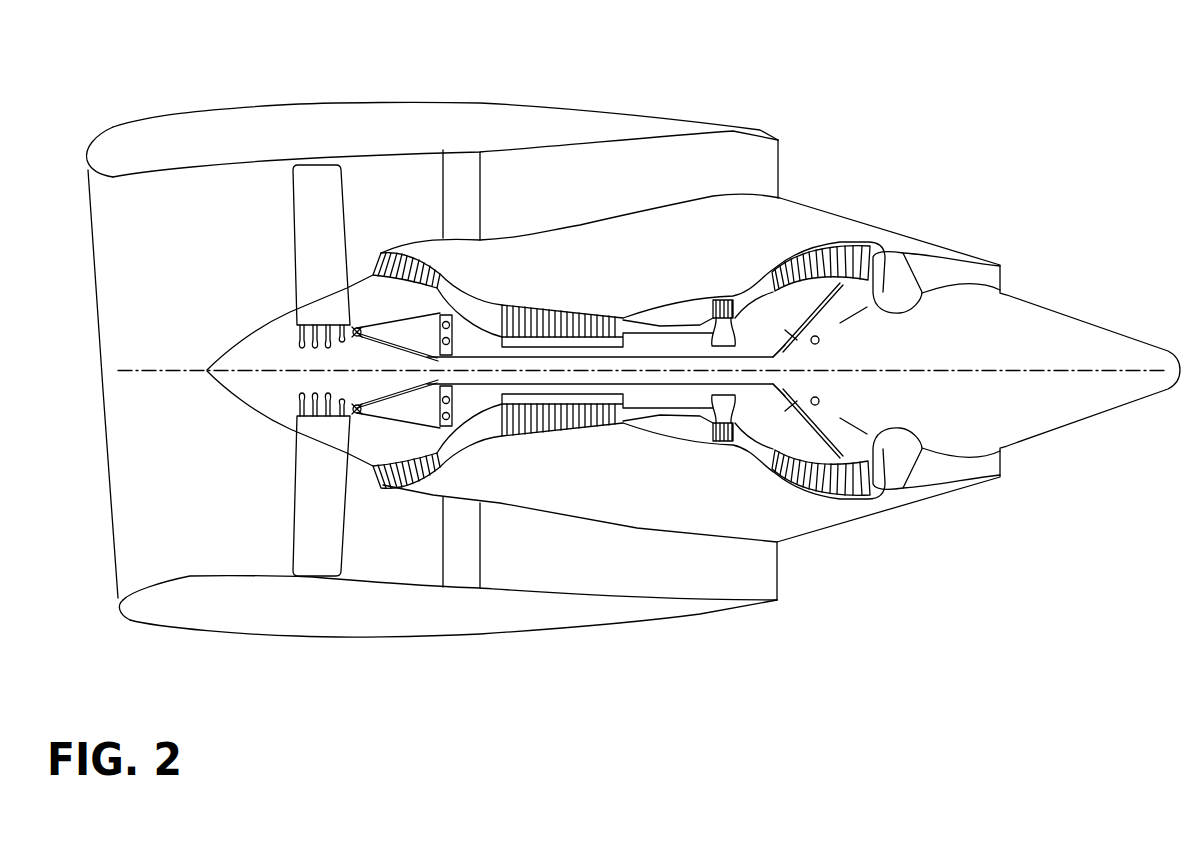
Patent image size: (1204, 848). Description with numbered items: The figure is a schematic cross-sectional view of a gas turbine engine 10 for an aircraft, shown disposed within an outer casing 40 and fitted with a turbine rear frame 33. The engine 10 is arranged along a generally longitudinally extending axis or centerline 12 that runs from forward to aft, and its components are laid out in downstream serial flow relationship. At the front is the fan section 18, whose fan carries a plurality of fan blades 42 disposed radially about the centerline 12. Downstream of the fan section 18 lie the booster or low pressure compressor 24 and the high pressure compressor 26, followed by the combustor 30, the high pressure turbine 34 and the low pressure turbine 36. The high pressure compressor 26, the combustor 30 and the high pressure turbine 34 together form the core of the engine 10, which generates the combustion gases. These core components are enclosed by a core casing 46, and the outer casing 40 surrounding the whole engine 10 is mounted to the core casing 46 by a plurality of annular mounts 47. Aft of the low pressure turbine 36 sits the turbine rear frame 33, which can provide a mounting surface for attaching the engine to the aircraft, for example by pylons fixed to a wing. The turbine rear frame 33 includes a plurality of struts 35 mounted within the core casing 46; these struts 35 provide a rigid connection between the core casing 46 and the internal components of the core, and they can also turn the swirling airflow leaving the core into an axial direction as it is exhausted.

The gas turbine engine 10 is at (684, 75).
The centerline 12 is at (136, 368).
The fan section 18 is at (277, 370).
The low pressure compressor 24 is at (432, 482).
The high pressure compressor 26 is at (513, 447).
The combustor 30 is at (672, 447).
The turbine rear frame 33 is at (925, 480).
The high pressure turbine 34 is at (729, 463).
The struts 35 is at (1000, 454).
The low pressure turbine 36 is at (835, 505).
The outer casing 40 is at (443, 103).
The fan blades 42 is at (293, 527).
The core casing 46 is at (633, 530).
The annular mounts 47 is at (483, 181).